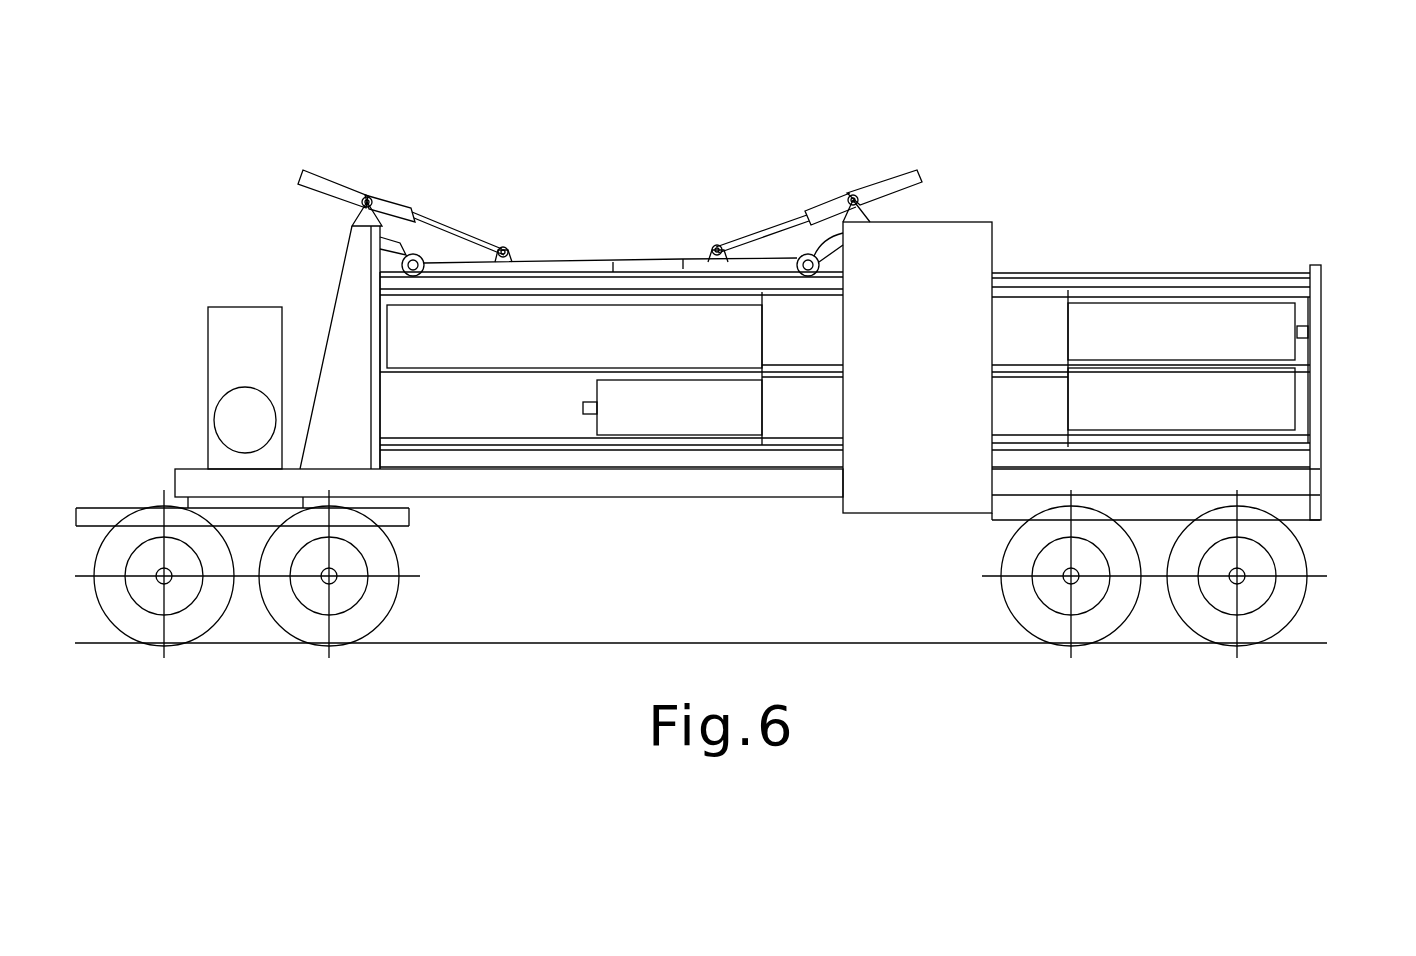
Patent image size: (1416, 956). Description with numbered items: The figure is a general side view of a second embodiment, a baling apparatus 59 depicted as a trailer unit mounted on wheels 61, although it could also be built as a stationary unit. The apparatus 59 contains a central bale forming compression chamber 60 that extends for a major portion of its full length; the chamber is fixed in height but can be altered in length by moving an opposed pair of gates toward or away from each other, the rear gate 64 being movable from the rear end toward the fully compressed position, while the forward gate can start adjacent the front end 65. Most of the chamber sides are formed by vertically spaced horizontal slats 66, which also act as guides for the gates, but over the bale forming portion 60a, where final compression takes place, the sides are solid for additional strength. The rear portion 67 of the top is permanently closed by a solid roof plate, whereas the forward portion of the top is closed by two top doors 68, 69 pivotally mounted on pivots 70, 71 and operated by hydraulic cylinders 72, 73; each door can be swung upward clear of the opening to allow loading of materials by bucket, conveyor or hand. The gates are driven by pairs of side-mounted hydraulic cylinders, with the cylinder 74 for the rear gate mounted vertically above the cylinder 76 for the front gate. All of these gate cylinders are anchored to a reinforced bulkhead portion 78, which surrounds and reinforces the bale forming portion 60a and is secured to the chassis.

The baling apparatus 59 is at (225, 265).
The compression chamber 60 is at (615, 318).
The bale forming portion of the compression chamber 60a is at (976, 192).
The wheels 61 is at (195, 630).
The rear gate 64 is at (1314, 306).
The front end 65 is at (378, 292).
The horizontal slats 66 is at (1311, 372).
The rear portion of the top 67 is at (1140, 272).
The top door 68 is at (540, 262).
The top door 69 is at (685, 262).
The pivot 70 is at (405, 258).
The pivot 71 is at (806, 253).
The hydraulic cylinder 72 is at (304, 180).
The hydraulic cylinder 73 is at (893, 168).
The hydraulic cylinder 74 is at (1181, 331).
The hydraulic cylinder 76 is at (1181, 399).
The reinforced bulkhead portion 78 is at (917, 367).